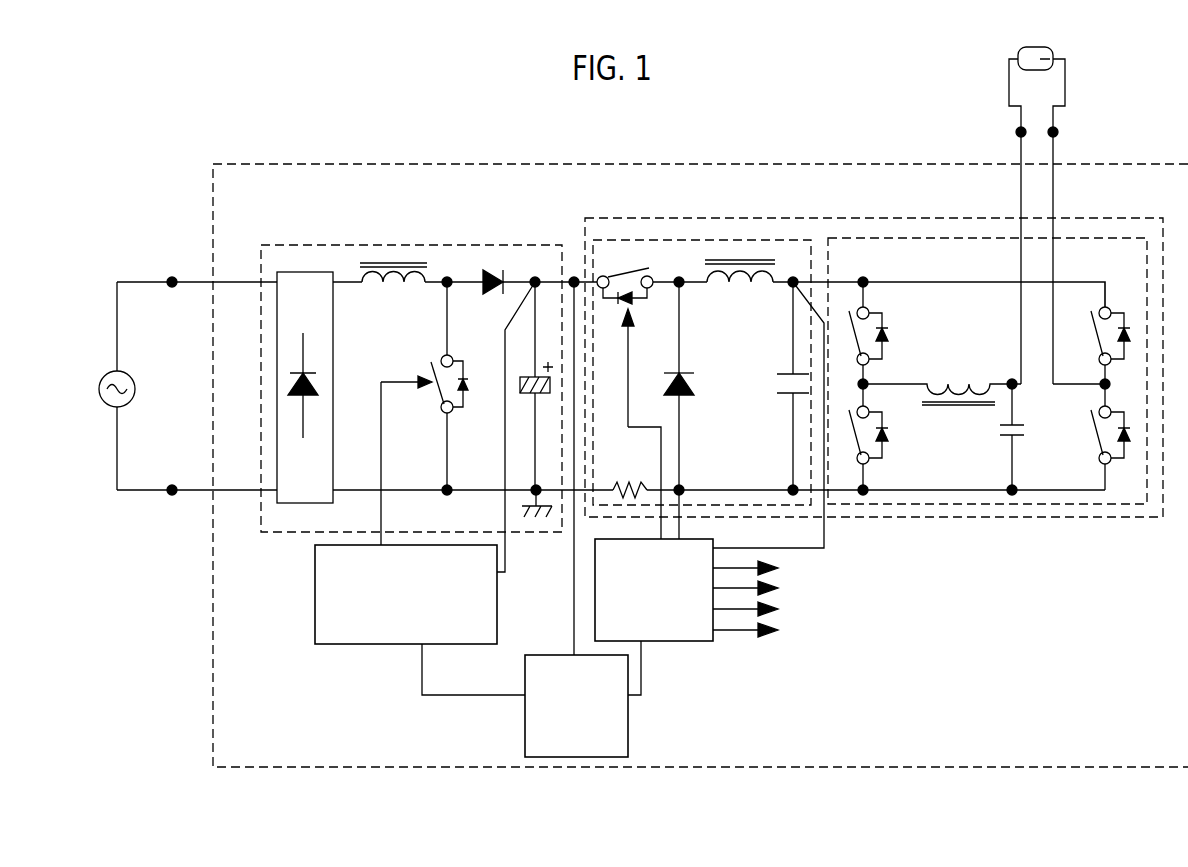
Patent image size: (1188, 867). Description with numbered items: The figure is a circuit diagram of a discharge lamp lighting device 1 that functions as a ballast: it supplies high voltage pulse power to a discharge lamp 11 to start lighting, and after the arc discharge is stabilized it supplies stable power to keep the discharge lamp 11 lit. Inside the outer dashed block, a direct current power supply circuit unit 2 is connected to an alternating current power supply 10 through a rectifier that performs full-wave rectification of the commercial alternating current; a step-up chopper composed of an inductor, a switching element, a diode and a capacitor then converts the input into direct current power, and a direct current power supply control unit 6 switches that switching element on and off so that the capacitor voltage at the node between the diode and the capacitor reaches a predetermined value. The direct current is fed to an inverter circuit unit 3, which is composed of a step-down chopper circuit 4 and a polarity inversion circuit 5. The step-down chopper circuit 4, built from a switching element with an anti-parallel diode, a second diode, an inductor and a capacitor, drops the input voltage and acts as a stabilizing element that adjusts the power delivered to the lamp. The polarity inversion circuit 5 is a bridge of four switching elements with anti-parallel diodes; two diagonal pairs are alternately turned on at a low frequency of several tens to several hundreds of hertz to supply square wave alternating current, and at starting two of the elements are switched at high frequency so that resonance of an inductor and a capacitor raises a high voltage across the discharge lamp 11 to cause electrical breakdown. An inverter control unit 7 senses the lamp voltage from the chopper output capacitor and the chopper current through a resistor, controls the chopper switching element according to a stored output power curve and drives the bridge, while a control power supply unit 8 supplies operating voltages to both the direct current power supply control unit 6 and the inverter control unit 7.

The discharge lamp lighting device 1 is at (258, 165).
The direct current power supply circuit unit 2 is at (507, 244).
The inverter circuit unit 3 is at (808, 218).
The step-down chopper circuit 4 is at (660, 240).
The polarity inversion circuit 5 is at (923, 238).
The direct current power supply control unit 6 is at (397, 644).
The inverter control unit 7 is at (677, 641).
The control power supply unit 8 is at (525, 727).
The alternating current power supply 10 is at (105, 373).
The discharge lamp 11 is at (1057, 53).